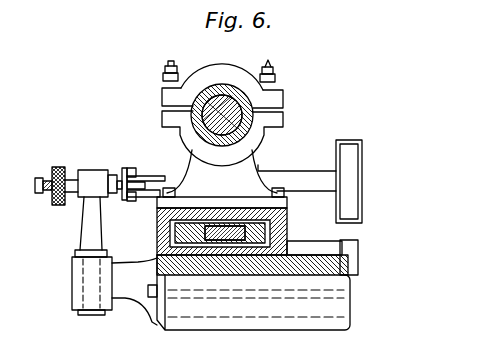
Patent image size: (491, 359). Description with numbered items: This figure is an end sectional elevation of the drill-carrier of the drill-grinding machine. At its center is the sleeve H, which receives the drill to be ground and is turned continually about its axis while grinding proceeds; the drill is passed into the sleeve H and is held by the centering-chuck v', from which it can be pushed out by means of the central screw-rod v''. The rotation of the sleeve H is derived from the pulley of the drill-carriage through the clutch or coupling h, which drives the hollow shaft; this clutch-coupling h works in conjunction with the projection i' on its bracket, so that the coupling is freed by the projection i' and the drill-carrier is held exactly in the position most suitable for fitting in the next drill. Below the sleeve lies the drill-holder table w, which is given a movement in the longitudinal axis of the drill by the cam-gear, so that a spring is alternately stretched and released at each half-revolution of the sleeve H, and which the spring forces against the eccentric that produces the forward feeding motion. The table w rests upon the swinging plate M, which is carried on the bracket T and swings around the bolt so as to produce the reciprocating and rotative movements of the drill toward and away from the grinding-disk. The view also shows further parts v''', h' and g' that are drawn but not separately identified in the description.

The sleeve H is at (226, 90).
The centering-chuck v' is at (233, 84).
The central screw-rod v'' is at (230, 196).
The lower bearing housing v''' is at (222, 154).
The clutch-coupling h is at (143, 175).
The projection i' is at (115, 170).
The pedestal h' is at (109, 261).
The drill-holder table w is at (158, 224).
The flange disc g' is at (318, 181).
The bracket T is at (343, 263).
The swinging plate M is at (268, 171).